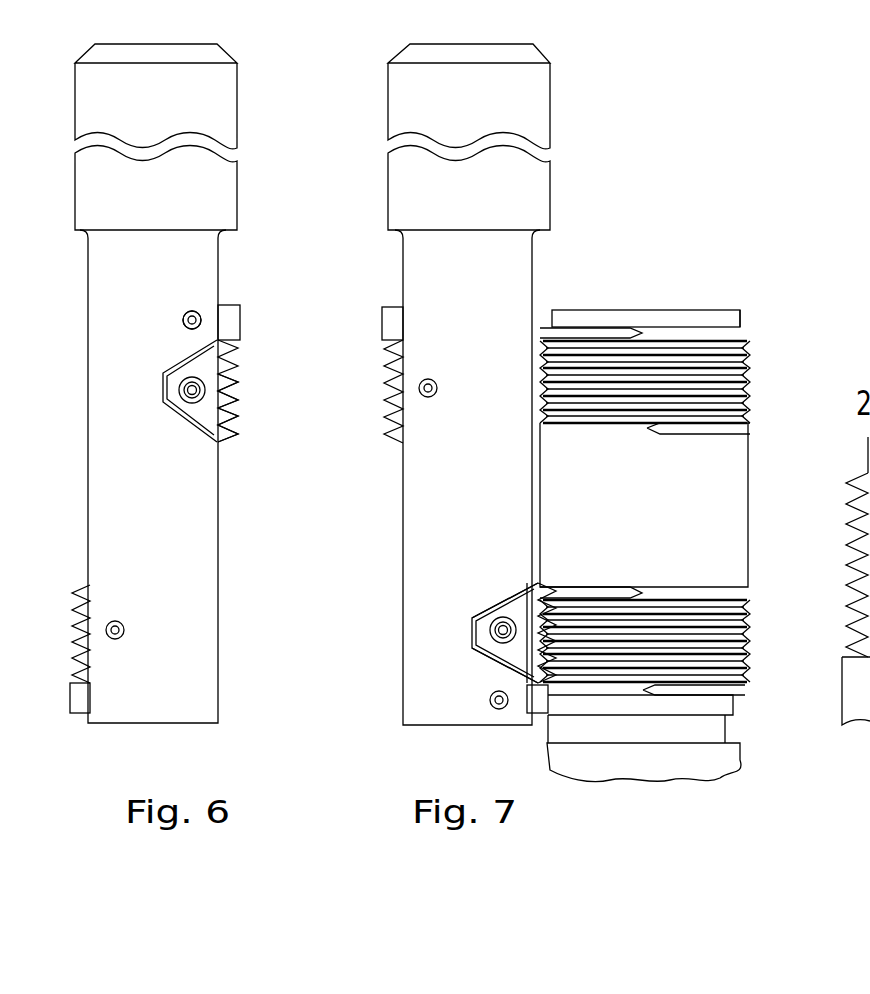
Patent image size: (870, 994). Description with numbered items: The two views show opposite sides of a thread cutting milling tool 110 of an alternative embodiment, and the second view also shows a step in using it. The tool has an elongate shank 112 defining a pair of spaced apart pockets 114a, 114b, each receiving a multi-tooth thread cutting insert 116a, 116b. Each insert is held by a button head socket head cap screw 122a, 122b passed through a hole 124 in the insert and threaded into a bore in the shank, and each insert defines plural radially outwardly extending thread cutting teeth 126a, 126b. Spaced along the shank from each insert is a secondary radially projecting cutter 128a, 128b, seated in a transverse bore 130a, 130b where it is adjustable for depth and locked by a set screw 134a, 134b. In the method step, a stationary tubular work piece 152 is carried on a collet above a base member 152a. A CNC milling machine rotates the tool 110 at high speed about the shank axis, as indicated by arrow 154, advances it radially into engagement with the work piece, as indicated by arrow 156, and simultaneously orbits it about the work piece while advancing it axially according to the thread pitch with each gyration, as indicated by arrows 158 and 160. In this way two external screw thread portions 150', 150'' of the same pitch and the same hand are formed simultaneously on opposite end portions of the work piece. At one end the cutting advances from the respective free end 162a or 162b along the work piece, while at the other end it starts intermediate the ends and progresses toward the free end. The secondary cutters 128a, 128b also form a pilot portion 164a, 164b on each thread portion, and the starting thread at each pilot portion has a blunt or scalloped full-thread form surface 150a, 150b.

In FIG. 6, the thread cutting milling tool 110 is at (391, 252).
In FIG. 6, the elongate shank 112 is at (428, 278).
In FIG. 6, the first pocket 114a is at (196, 442).
In FIG. 7, the second pocket 114b is at (502, 603).
In FIG. 6, the first thread cutting insert 116a is at (232, 355).
In FIG. 7, the second thread cutting insert 116b is at (512, 655).
In FIG. 6, the first socket head cap screw 122a is at (232, 400).
In FIG. 7, the second socket head cap screw 122b is at (488, 617).
In FIG. 6, the hole 124 is at (178, 406).
In FIG. 7, the hole 124 is at (476, 633).
In FIG. 6, the first thread cutting teeth 126a is at (244, 431).
In FIG. 6, the second thread cutting teeth 126b is at (74, 593).
In FIG. 7, the second thread cutting teeth 126b is at (552, 581).
In FIG. 6, the first secondary cutter 128a is at (246, 331).
In FIG. 7, the first secondary cutter 128a is at (392, 323).
In FIG. 7, the second secondary cutter 128b is at (537, 708).
In FIG. 6, the first transverse bore 130a is at (240, 305).
In FIG. 6, the second transverse bore 130b is at (72, 693).
In FIG. 6, the first set screw 134a is at (192, 331).
In FIG. 7, the second set screw 134b is at (490, 700).
In FIG. 7, the blunt starting thread end 150a is at (646, 332).
In FIG. 7, the blunt starting thread end 150b is at (640, 690).
In FIG. 7, the first screw thread portion 150' is at (696, 358).
In FIG. 7, the second screw thread portion 150'' is at (684, 633).
In FIG. 7, the work piece 152 is at (672, 507).
In FIG. 7, the base member 152a is at (742, 757).
In FIG. 7, the tool rotation arrow 154 is at (507, 197).
In FIG. 7, the radial advance arrow 156 is at (500, 535).
In FIG. 7, the gyration arrow 158 is at (748, 455).
In FIG. 7, the axial advance arrow 160 is at (508, 468).
In FIG. 7, the first free end 162a is at (600, 285).
In FIG. 7, the second free end 162b is at (566, 772).
In FIG. 7, the first pilot portion 164a is at (748, 318).
In FIG. 7, the second pilot portion 164b is at (736, 712).